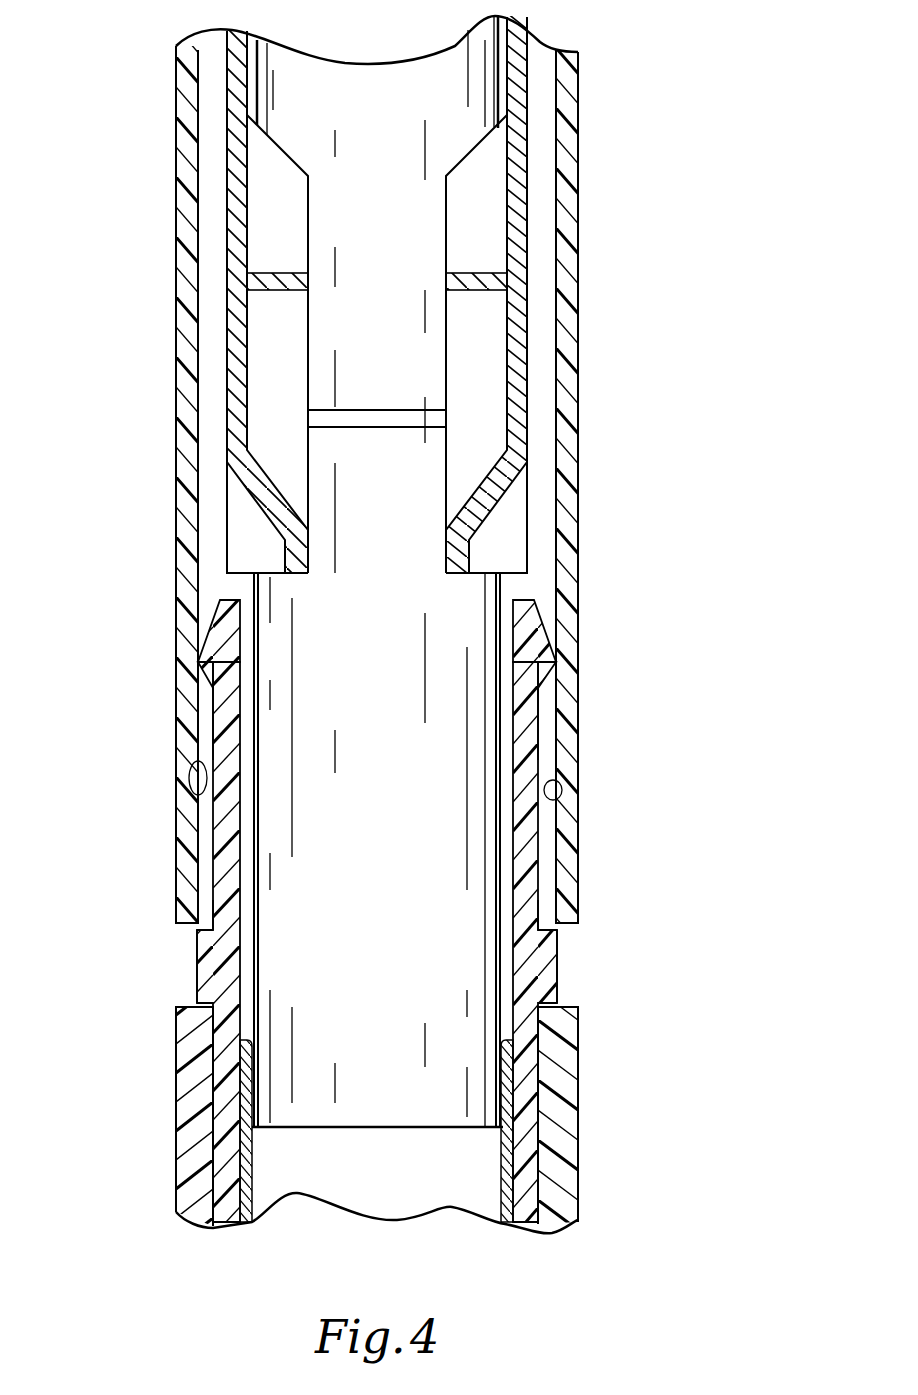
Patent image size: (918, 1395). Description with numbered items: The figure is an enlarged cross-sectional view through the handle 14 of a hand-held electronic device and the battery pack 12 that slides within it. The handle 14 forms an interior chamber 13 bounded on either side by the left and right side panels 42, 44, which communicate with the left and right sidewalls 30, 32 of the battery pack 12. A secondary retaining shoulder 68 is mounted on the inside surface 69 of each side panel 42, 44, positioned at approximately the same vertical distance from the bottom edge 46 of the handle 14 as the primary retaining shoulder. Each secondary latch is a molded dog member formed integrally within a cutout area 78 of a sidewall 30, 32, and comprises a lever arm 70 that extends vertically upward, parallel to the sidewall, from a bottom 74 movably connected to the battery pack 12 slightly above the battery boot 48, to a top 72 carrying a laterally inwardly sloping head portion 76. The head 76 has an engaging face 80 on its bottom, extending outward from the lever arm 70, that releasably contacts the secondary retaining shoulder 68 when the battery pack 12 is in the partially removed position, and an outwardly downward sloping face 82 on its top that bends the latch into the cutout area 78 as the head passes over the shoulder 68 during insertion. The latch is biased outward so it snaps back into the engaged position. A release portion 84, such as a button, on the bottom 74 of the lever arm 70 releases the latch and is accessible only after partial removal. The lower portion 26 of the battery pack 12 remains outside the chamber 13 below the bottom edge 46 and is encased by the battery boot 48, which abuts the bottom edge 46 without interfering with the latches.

The handle 14 is at (370, 624).
The left side panel 42 is at (183, 293).
The right side panel 44 is at (580, 250).
The left sidewall 30 is at (240, 190).
The battery pack 12 is at (548, 192).
The interior chamber 13 is at (545, 328).
The right sidewall 32 is at (527, 66).
The cutout area 78 is at (232, 588).
The outwardly downward sloping face 82 is at (213, 602).
The head portion 76 is at (197, 637).
The engaging face 80 is at (205, 670).
The secondary retaining shoulder 68 is at (205, 692).
The top of the lever arm 72 is at (200, 735).
The inside surface 69 is at (196, 769).
The lever arm 70 is at (202, 832).
The bottom of the lever arm 74 is at (220, 922).
The bottom edge 46 is at (187, 928).
The release portion 84 is at (197, 948).
The lower portion 26 is at (460, 1088).
The battery boot 48 is at (578, 1185).